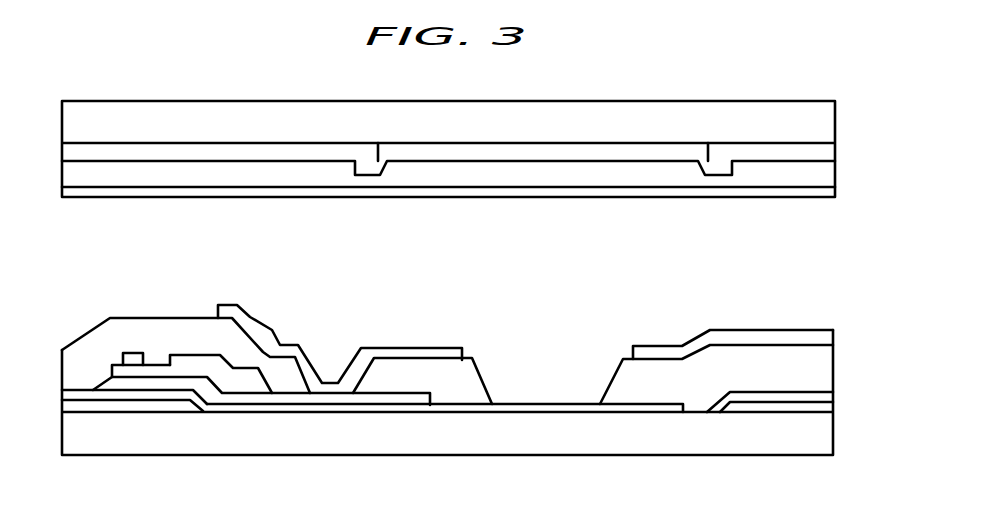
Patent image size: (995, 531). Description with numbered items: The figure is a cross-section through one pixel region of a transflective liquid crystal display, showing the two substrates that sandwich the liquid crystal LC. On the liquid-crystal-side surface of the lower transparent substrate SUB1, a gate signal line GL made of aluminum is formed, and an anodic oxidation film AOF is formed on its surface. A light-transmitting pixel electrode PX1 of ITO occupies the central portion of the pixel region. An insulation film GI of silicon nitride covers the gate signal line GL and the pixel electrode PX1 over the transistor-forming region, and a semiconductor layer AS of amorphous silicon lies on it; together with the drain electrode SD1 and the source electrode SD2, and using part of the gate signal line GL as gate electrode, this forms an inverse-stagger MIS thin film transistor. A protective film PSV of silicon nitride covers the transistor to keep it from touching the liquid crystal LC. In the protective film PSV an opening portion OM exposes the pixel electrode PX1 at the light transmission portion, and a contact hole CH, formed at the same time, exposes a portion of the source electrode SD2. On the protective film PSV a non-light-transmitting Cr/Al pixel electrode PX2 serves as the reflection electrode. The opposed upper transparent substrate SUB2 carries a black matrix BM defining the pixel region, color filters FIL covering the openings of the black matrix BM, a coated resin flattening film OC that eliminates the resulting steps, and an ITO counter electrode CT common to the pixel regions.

The transparent substrate SUB2 is at (722, 112).
The black matrix BM is at (195, 152).
The color filter FIL is at (617, 155).
The flattening film OC is at (277, 176).
The counter electrode CT is at (660, 189).
The liquid crystal LC is at (448, 257).
The transparent substrate SUB1 is at (703, 452).
The gate signal line GL is at (106, 407).
The anodic oxidation film AOF is at (201, 404).
The insulation film GI is at (252, 398).
The pixel electrode PX1 is at (621, 406).
The semiconductor layer AS is at (160, 372).
The drain electrode SD1 is at (133, 350).
The source electrode SD2 is at (393, 398).
The protective film PSV is at (238, 340).
The pixel electrode PX2 is at (430, 345).
The contact hole CH is at (335, 361).
The opening portion OM is at (620, 380).